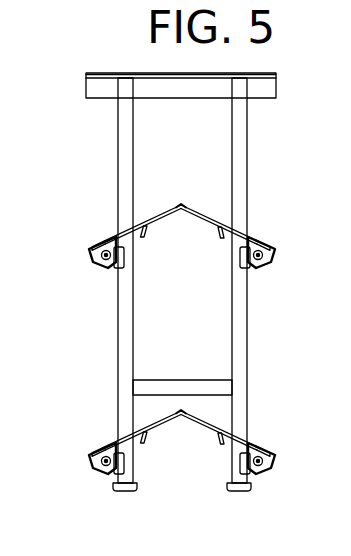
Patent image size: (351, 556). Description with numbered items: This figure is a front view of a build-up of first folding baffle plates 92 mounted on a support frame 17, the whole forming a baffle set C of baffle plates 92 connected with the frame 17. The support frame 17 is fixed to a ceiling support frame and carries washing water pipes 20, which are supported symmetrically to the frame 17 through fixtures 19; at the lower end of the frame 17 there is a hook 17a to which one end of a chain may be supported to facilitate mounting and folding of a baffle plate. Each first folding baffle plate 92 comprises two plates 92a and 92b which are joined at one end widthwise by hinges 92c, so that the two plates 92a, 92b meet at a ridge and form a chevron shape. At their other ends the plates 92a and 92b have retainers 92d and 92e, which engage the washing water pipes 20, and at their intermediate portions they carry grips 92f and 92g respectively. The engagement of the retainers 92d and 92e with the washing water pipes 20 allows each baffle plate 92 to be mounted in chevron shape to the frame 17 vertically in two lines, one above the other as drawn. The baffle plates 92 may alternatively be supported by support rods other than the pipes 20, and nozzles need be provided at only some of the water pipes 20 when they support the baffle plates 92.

The baffle set C is at (252, 137).
The support frame 17 is at (247, 187).
The hook 17a is at (238, 466).
The fixture 19 is at (251, 270).
The washing water pipe 20 is at (91, 250).
The first folding baffle plate 92 is at (183, 302).
The plate 92a is at (251, 242).
The plate 92b is at (102, 240).
The hinge 92c is at (178, 204).
The retainer 92d is at (268, 262).
The retainer 92e is at (99, 264).
The grip 92f is at (219, 239).
The grip 92g is at (143, 238).